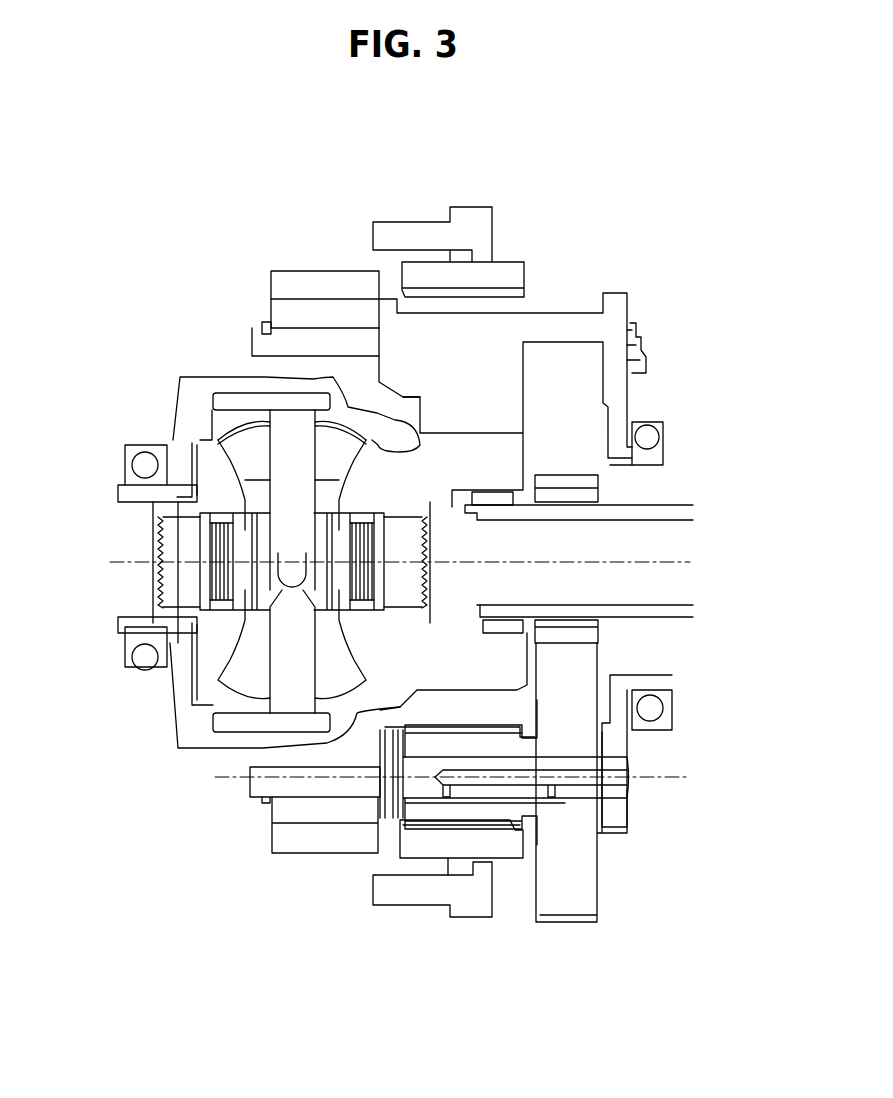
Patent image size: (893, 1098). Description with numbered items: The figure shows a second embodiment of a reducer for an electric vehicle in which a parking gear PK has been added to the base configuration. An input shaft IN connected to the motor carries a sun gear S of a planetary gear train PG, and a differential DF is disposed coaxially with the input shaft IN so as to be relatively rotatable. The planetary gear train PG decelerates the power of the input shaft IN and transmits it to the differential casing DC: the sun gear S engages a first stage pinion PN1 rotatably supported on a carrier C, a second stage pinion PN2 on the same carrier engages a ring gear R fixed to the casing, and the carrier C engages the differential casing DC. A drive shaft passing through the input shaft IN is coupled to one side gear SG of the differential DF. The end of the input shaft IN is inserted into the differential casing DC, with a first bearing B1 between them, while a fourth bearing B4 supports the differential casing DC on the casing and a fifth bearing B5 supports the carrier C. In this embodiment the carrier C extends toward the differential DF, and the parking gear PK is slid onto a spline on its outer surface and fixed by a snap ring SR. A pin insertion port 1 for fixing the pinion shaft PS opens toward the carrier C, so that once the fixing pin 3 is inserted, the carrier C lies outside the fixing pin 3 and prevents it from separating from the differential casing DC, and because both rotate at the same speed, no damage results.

The planetary gear train PG is at (566, 296).
The parking gear PK is at (318, 305).
The carrier C is at (440, 340).
The ring gear R is at (512, 275).
The snap ring SR is at (265, 321).
The pin insertion port 1 is at (346, 402).
The differential casing DC is at (190, 383).
The fixing pin 3 is at (225, 400).
The fourth bearing B4 is at (145, 465).
The pinion shaft PS is at (287, 497).
The differential DF is at (168, 707).
The input shaft IN is at (668, 620).
The sun gear S is at (590, 478).
The first bearing B1 is at (493, 500).
The fifth bearing B5 is at (655, 437).
The first stage pinion PN1 is at (570, 915).
The second stage pinion PN2 is at (425, 825).
The side gear SG is at (360, 650).